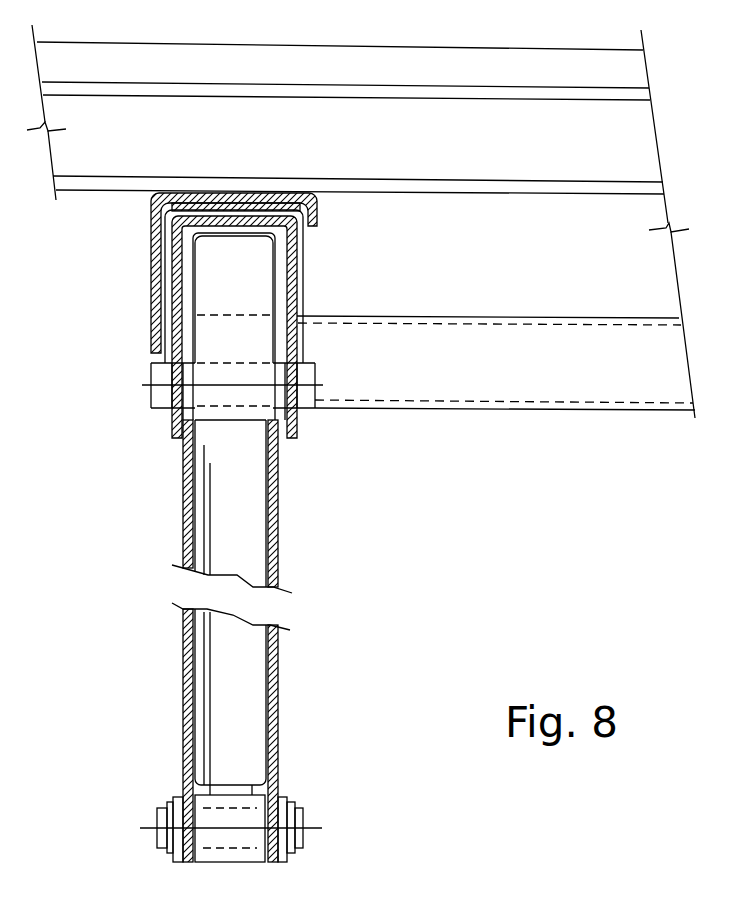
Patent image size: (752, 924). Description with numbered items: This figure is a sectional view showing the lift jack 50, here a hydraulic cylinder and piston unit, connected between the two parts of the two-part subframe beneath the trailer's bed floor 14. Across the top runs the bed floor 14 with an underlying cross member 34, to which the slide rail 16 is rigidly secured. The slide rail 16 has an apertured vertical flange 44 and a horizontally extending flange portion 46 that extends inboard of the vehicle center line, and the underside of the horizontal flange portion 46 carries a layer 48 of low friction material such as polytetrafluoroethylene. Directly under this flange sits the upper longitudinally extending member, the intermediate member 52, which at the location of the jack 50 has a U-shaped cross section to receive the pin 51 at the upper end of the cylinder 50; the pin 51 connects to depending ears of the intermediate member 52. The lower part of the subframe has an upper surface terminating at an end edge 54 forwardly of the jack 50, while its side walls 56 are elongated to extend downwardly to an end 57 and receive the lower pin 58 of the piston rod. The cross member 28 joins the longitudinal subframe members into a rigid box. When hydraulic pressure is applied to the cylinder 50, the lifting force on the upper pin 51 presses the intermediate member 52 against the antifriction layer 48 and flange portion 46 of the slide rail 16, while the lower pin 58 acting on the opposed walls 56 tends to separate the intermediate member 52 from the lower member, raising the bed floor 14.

The bed floor 14 is at (403, 58).
The cross member 34 is at (524, 167).
The cross member 28 is at (387, 398).
The slide rail 16 is at (150, 312).
The vertical flange 44 is at (157, 217).
The horizontally extending flange portion 46 is at (267, 197).
The low friction layer 48 is at (181, 196).
The intermediate member 52 is at (293, 262).
The end edge 54 is at (208, 232).
The pin 51 is at (310, 370).
The side walls 56 is at (279, 490).
The jack 50 is at (255, 660).
The lower pin 58 is at (300, 818).
The end 57 is at (272, 862).